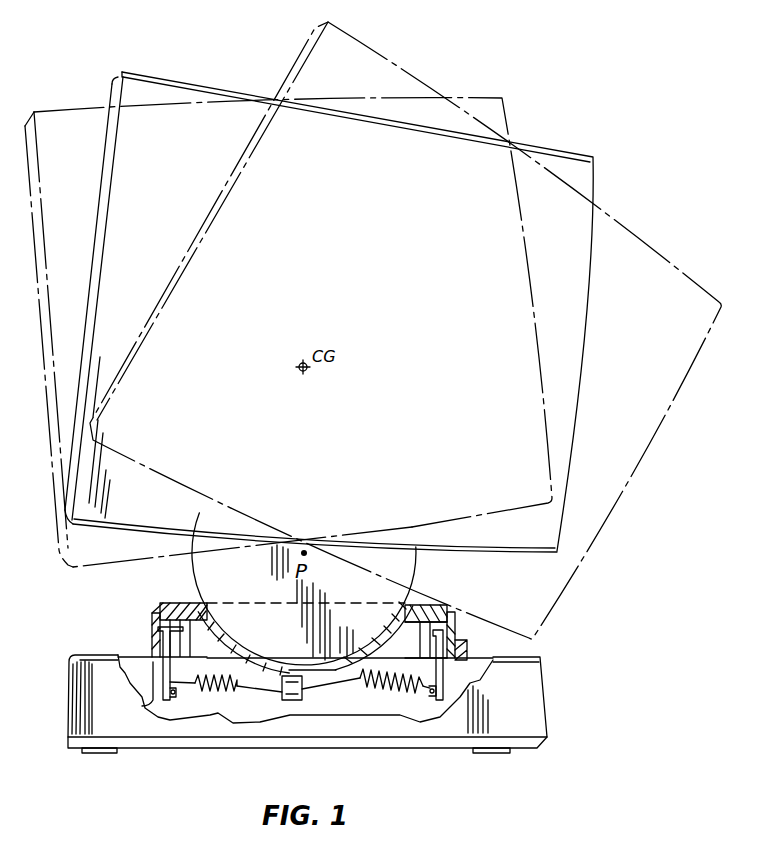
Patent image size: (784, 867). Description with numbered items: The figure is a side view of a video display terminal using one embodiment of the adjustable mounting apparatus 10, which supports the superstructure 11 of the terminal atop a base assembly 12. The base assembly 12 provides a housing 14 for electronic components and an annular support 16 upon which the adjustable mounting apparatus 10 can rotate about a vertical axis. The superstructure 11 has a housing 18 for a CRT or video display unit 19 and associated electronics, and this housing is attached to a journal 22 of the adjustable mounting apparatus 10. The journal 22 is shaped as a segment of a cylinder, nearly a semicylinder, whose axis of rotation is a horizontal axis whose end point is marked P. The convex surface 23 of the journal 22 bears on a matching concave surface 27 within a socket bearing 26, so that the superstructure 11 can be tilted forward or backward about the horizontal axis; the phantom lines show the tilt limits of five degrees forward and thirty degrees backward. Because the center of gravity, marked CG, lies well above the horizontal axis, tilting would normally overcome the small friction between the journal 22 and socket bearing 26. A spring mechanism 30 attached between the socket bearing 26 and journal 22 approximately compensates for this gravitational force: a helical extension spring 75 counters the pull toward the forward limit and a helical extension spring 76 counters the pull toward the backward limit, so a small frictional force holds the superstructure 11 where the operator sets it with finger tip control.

The adjustable mounting apparatus 10 is at (96, 612).
The superstructure 11 is at (144, 68).
The base assembly 12 is at (60, 732).
The housing 14 is at (545, 698).
The annular support 16 is at (455, 640).
The housing 18 is at (586, 332).
The CRT or video display unit 19 is at (98, 210).
The journal 22 is at (415, 570).
The convex surface 23 is at (235, 652).
The socket bearing 26 is at (438, 606).
The concave surface 27 is at (212, 622).
The spring mechanism 30 is at (284, 716).
The helical extension spring 75 is at (212, 698).
The helical extension spring 76 is at (397, 696).